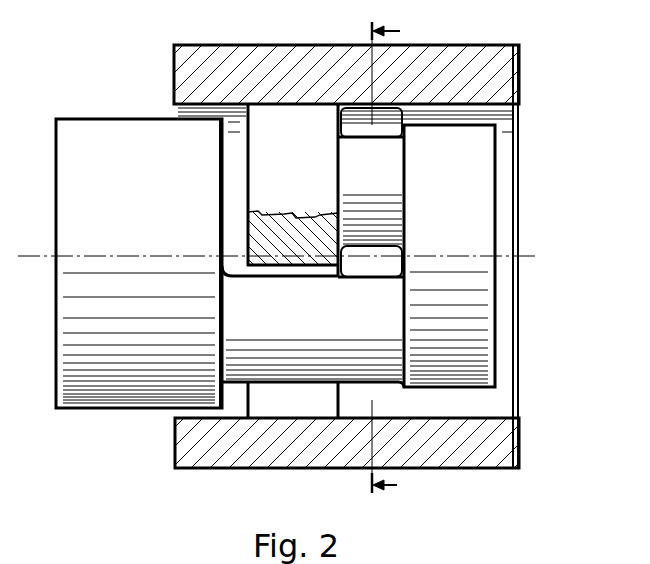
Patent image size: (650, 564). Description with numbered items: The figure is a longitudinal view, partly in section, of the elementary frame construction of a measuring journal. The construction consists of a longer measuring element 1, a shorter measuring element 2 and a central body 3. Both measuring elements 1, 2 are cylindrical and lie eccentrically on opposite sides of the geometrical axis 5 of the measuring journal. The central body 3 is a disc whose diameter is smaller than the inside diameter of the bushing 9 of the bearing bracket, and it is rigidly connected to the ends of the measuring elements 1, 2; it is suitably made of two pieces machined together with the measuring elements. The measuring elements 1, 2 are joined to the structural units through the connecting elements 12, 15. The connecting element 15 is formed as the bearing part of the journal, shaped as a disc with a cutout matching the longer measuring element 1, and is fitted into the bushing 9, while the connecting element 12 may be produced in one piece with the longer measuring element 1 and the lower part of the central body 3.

The longer measuring element 1 is at (378, 333).
The shorter measuring element 2 is at (383, 148).
The central body 3 is at (479, 202).
The geometrical axis 5 is at (37, 258).
The bushing 9 is at (192, 80).
The connecting element 12 is at (123, 392).
The connecting element 15 is at (293, 122).